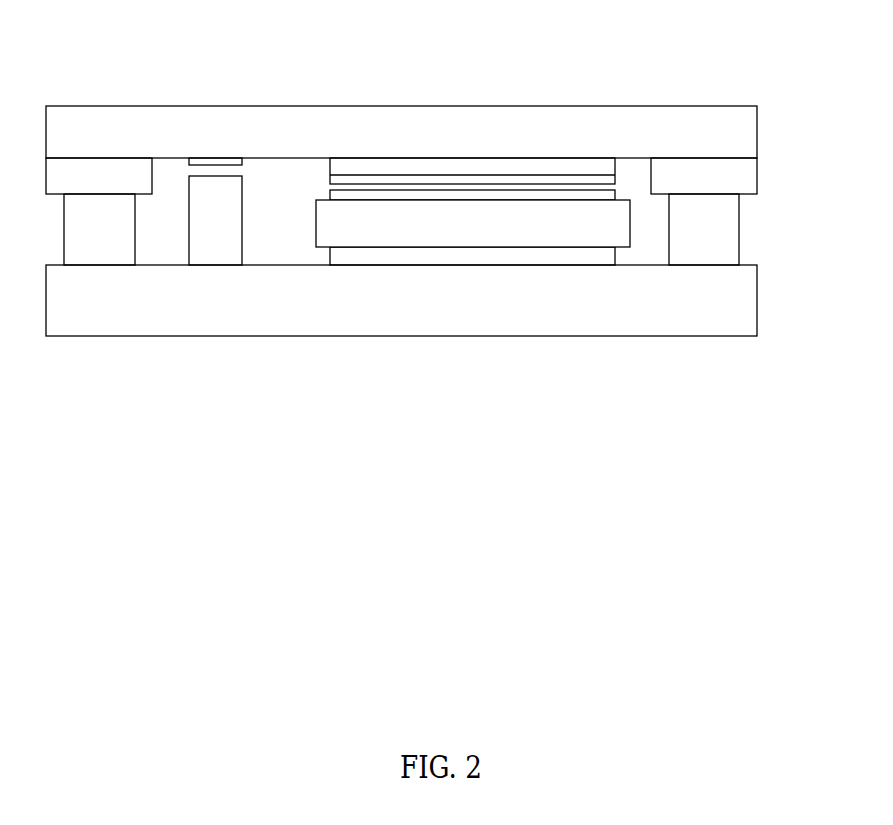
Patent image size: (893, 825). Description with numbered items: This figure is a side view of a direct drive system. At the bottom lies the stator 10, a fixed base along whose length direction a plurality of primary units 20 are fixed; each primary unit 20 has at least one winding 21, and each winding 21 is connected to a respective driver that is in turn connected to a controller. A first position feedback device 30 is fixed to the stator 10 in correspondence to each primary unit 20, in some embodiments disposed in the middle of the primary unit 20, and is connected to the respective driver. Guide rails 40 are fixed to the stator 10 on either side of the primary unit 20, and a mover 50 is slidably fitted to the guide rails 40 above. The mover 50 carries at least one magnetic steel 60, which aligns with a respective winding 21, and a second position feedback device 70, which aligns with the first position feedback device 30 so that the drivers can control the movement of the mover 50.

The stator 10 is at (373, 317).
The primary unit 20 is at (517, 259).
The winding 21 is at (598, 232).
The first position feedback device 30 is at (221, 236).
The guide rail 40 is at (120, 240).
The mover 50 is at (694, 118).
The magnetic steel 60 is at (527, 173).
The second position feedback device 70 is at (226, 162).